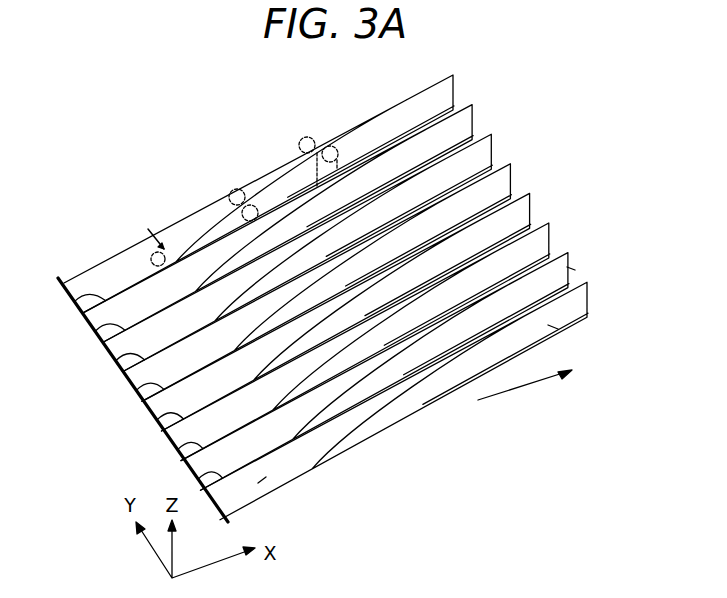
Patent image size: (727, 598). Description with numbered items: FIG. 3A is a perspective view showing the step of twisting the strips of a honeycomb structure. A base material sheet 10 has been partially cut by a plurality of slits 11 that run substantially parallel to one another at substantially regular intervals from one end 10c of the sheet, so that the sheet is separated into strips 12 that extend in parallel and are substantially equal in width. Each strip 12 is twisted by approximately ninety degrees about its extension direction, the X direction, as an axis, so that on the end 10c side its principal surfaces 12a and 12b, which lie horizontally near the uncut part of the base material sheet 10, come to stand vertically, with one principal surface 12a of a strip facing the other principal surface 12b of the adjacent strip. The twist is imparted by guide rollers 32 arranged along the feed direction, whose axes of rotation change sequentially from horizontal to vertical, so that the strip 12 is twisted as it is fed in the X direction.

The base material sheet 10 is at (10, 434).
The end of the base material sheet 10c is at (568, 270).
The slit 11 is at (112, 298).
The strip 12 is at (461, 95).
The principal surface of the strip 12a is at (262, 483).
The other principal surface of the strip 12b is at (553, 327).
The guide roller 32 is at (150, 254).